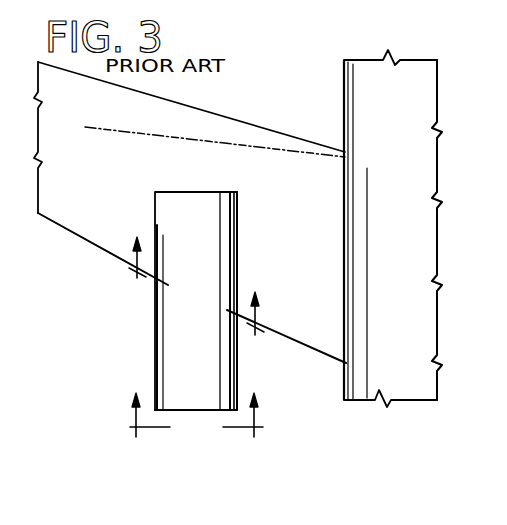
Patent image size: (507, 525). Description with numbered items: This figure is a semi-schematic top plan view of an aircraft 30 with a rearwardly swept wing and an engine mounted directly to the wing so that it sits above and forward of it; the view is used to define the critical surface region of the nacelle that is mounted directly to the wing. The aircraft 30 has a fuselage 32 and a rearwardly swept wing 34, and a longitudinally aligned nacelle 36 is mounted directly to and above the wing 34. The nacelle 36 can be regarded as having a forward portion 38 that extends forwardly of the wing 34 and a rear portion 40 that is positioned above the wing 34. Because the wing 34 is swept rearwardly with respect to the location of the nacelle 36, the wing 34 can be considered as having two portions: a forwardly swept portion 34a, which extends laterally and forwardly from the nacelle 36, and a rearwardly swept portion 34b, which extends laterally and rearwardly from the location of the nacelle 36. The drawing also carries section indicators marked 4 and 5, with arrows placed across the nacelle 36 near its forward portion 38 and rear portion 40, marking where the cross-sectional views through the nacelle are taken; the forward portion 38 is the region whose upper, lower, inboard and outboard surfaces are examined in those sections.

The aircraft 30 is at (278, 102).
The fuselage 32 is at (424, 80).
The rearwardly swept wing 34 is at (174, 109).
The forwardly swept portion 34a is at (330, 350).
The rearwardly swept portion 34b is at (84, 222).
The nacelle 36 is at (255, 217).
The forward portion 38 is at (222, 356).
The rear portion 40 is at (200, 207).
The section line 4- 4 is at (193, 402).
The section line 5- 5 is at (196, 272).